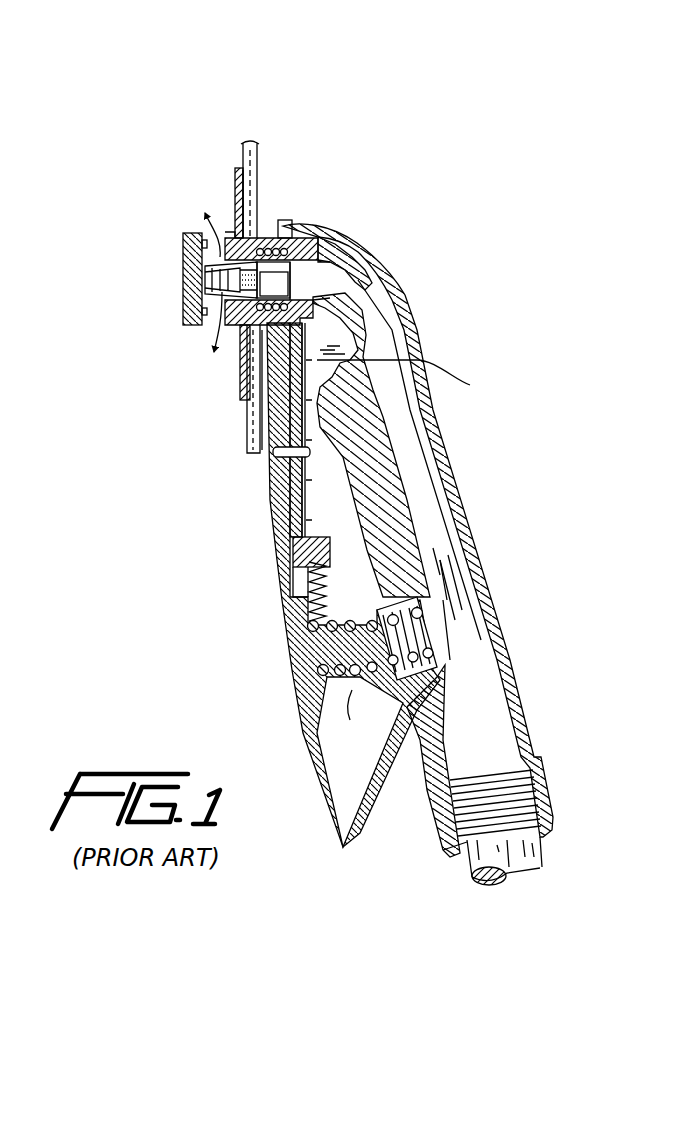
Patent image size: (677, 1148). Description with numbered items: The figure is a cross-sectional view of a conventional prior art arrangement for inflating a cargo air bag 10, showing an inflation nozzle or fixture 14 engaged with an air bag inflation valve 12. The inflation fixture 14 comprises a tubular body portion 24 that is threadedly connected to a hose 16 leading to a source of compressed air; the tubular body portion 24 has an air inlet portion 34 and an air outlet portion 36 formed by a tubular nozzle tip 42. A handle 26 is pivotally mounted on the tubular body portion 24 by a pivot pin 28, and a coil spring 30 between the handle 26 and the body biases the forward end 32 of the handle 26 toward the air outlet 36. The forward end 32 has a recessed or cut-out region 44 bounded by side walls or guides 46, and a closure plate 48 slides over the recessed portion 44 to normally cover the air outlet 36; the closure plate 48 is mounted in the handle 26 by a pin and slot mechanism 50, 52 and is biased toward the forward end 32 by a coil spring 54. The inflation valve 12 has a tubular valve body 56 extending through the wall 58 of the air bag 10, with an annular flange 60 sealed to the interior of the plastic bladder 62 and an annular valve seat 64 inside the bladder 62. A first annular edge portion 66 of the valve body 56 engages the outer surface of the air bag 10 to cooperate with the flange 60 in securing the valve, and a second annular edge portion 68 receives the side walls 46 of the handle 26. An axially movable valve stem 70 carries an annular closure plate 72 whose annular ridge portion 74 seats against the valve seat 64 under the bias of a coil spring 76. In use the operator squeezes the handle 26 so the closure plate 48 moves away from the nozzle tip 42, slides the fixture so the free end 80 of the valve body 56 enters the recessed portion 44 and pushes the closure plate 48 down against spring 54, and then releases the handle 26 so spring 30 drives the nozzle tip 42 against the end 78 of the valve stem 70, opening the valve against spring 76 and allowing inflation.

The air bag 10 is at (261, 146).
The air bag inflation valve 12 is at (168, 336).
The inflation nozzle or fixture 14 is at (232, 686).
The hose 16 is at (545, 870).
The tubular body portion 24 is at (482, 535).
The handle 26 is at (272, 593).
The pivot pin 28 is at (430, 448).
The coil spring 30 is at (360, 672).
The forward end of the handle 32 is at (300, 228).
The air inlet portion 34 is at (500, 775).
The air outlet portion 36 is at (270, 403).
The tubular nozzle tip 42 is at (308, 234).
The recessed or cut-out region 44 is at (411, 374).
The side walls or guides 46 is at (291, 222).
The closure plate 48 is at (270, 452).
The pin of pin and slot mechanism 50 is at (310, 455).
The slot of pin and slot mechanism 52 is at (273, 542).
The coil spring 54 is at (330, 583).
The tubular valve body 56 is at (240, 357).
The wall of the air bag 58 is at (258, 470).
The annular flange 60 is at (232, 232).
The plastic bladder 62 is at (247, 455).
The annular valve seat 64 is at (222, 235).
The first annular edge portion 66 is at (245, 387).
The second annular edge portion 68 is at (408, 283).
The valve stem 70 is at (183, 277).
The annular closure plate 72 is at (182, 296).
The annular ridge portion 74 is at (213, 327).
The coil spring 76 is at (260, 238).
The end of the valve stem 78 is at (300, 333).
The free end of the valve body 80 is at (333, 243).